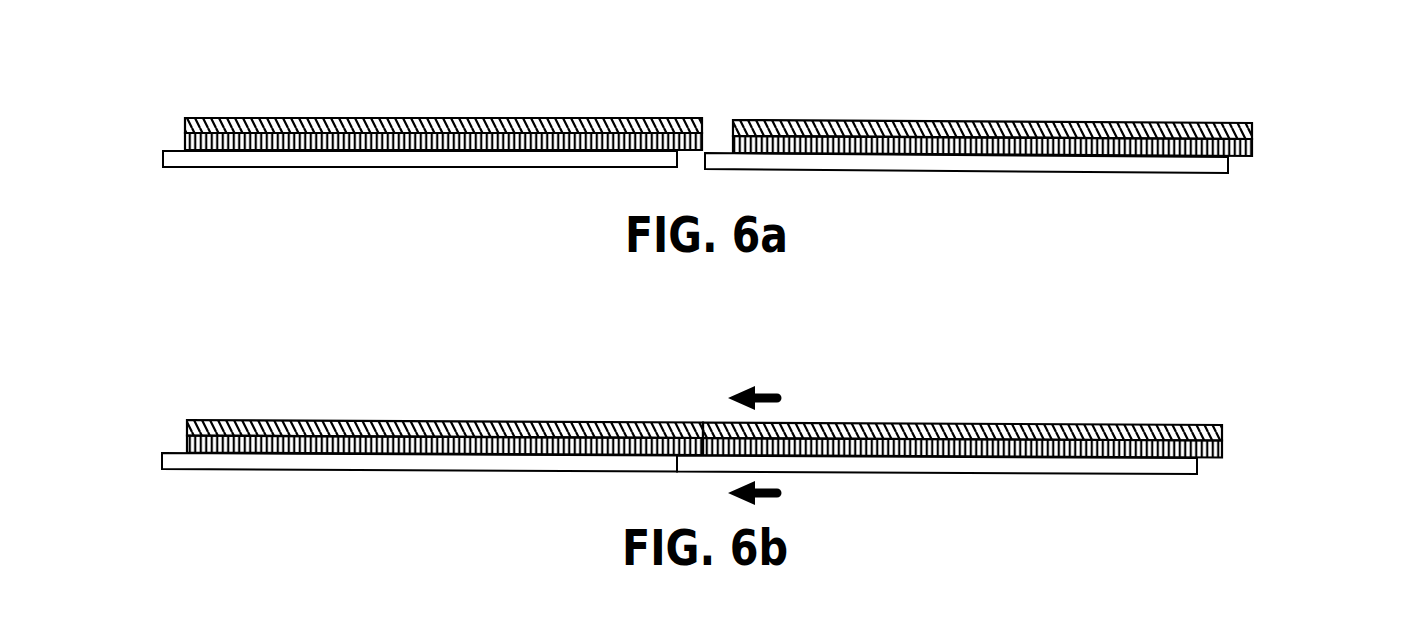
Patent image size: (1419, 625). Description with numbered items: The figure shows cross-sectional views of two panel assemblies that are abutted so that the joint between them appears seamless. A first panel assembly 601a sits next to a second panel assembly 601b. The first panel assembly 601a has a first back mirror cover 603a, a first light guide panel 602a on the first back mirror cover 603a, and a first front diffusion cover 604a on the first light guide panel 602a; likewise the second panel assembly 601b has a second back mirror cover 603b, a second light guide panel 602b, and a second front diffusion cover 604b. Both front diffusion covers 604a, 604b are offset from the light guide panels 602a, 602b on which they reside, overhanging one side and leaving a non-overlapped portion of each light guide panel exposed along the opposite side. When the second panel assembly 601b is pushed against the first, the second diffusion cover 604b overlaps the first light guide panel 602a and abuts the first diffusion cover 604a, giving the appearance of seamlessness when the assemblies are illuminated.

In FIG. 6a, the first panel assembly 601a is at (439, 88).
In FIG. 6b, the first panel assembly 601a is at (439, 385).
In FIG. 6a, the second panel assembly 601b is at (974, 88).
In FIG. 6b, the second panel assembly 601b is at (974, 388).
In FIG. 6a, the first light guide panel 602a is at (187, 140).
In FIG. 6b, the first light guide panel 602a is at (188, 443).
In FIG. 6a, the second light guide panel 602b is at (1252, 142).
In FIG. 6b, the second light guide panel 602b is at (1222, 447).
In FIG. 6a, the first back mirror cover 603a is at (187, 122).
In FIG. 6b, the first back mirror cover 603a is at (188, 423).
In FIG. 6a, the second back mirror cover 603b is at (1252, 123).
In FIG. 6b, the second back mirror cover 603b is at (1222, 425).
In FIG. 6a, the first front diffusion cover 604a is at (180, 157).
In FIG. 6b, the first front diffusion cover 604a is at (177, 458).
In FIG. 6a, the second front diffusion cover 604b is at (1222, 162).
In FIG. 6b, the second front diffusion cover 604b is at (1190, 462).